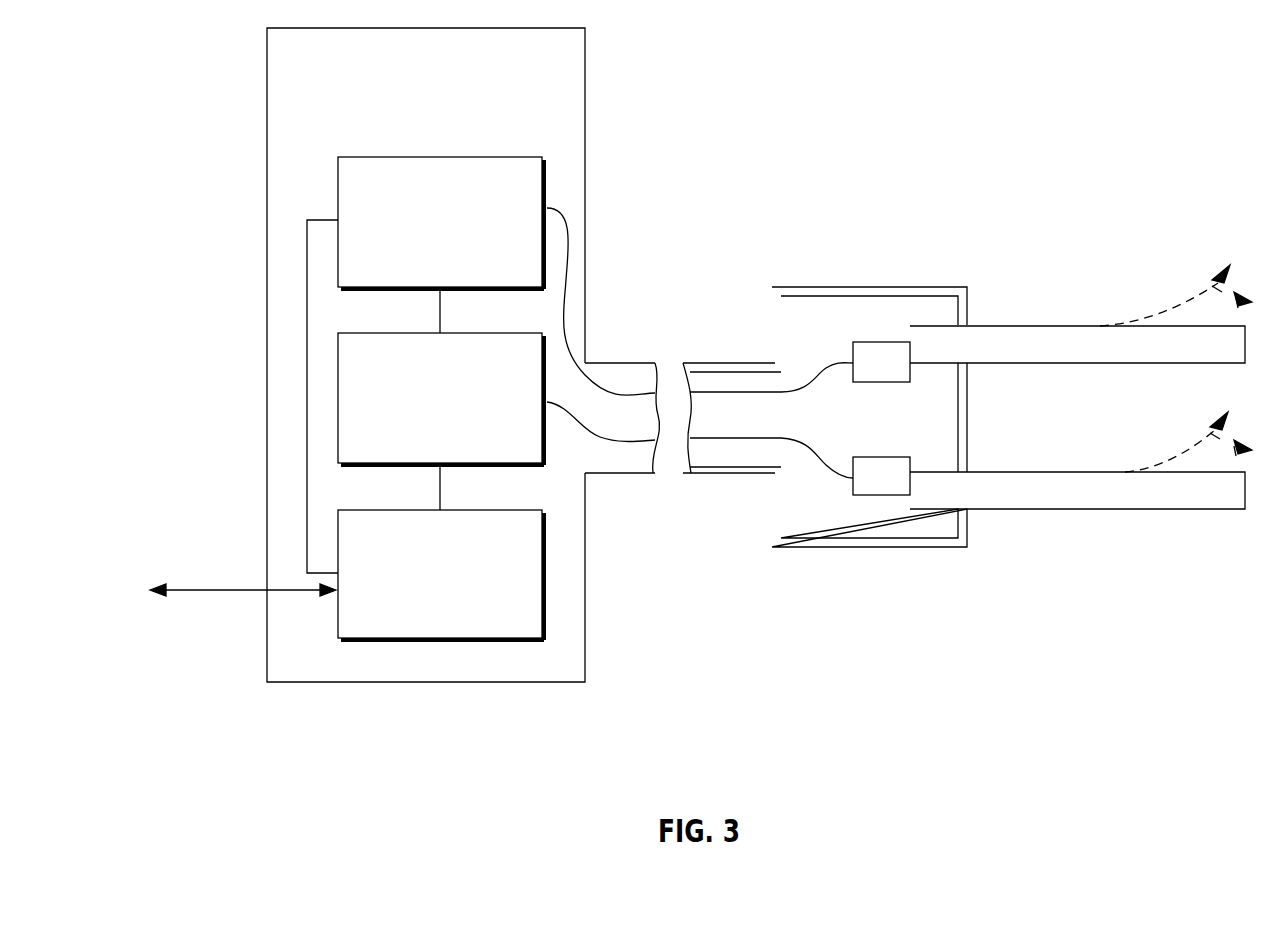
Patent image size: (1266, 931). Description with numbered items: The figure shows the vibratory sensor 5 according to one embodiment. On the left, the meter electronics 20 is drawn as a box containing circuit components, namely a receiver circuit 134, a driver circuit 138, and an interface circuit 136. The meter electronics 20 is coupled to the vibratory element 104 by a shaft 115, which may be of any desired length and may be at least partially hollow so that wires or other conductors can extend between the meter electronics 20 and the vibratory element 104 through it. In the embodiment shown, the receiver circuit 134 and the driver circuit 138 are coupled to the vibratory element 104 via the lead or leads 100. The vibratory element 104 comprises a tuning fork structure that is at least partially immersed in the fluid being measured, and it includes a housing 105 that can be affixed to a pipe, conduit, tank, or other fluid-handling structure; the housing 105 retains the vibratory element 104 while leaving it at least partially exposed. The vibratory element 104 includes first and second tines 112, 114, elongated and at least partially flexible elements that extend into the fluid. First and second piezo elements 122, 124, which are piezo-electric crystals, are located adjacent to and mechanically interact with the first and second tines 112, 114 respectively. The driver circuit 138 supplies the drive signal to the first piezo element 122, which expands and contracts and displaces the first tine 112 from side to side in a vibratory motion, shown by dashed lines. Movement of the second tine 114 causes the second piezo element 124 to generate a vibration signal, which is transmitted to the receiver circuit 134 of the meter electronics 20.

The vibratory sensor 5 is at (996, 119).
The meter electronics 20 is at (425, 138).
The leads 100 is at (246, 592).
The vibratory element 104 is at (1137, 571).
The housing 105 is at (905, 287).
The first tine 112 is at (1045, 510).
The second tine 114 is at (1043, 326).
The shaft 115 is at (607, 363).
The first piezo element 122 is at (875, 495).
The second piezo element 124 is at (875, 342).
The receiver circuit 134 is at (420, 276).
The interface circuit 136 is at (420, 619).
The driver circuit 138 is at (420, 452).